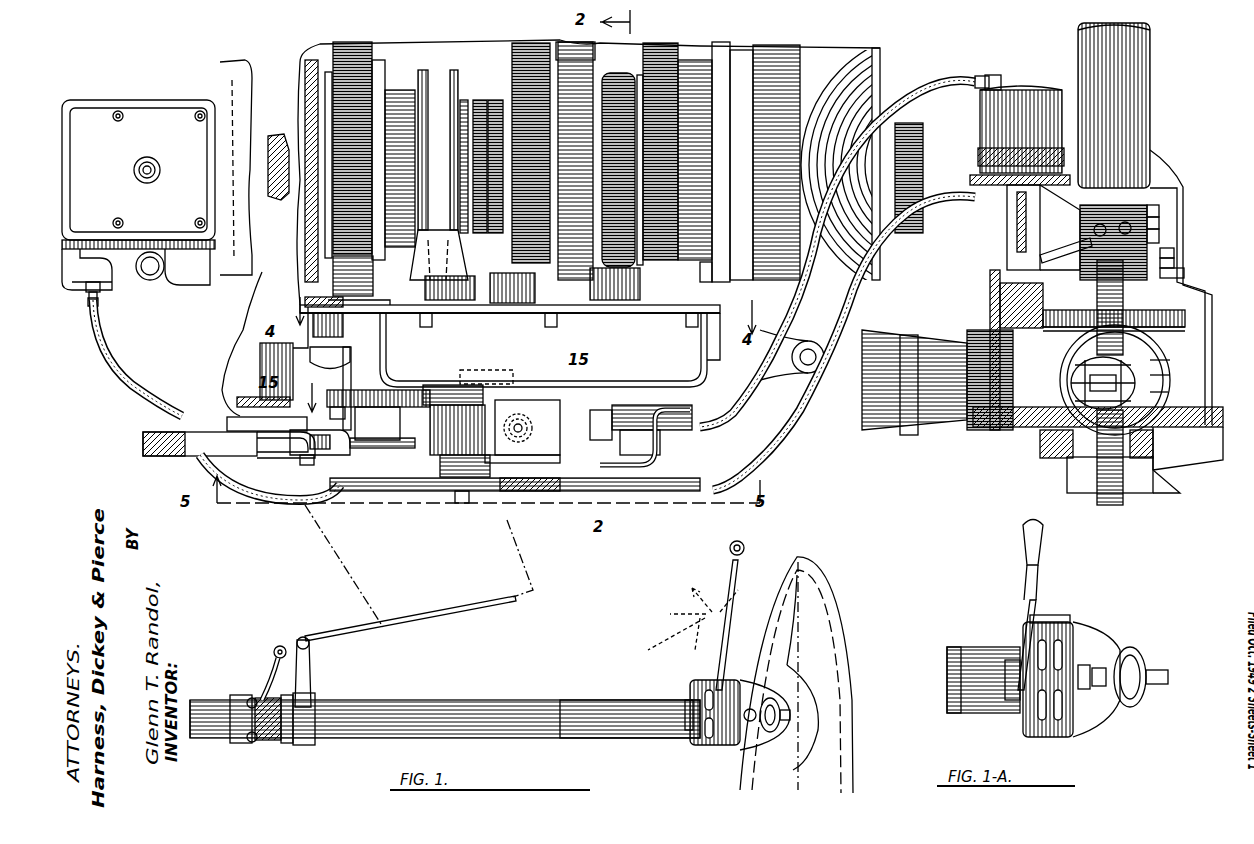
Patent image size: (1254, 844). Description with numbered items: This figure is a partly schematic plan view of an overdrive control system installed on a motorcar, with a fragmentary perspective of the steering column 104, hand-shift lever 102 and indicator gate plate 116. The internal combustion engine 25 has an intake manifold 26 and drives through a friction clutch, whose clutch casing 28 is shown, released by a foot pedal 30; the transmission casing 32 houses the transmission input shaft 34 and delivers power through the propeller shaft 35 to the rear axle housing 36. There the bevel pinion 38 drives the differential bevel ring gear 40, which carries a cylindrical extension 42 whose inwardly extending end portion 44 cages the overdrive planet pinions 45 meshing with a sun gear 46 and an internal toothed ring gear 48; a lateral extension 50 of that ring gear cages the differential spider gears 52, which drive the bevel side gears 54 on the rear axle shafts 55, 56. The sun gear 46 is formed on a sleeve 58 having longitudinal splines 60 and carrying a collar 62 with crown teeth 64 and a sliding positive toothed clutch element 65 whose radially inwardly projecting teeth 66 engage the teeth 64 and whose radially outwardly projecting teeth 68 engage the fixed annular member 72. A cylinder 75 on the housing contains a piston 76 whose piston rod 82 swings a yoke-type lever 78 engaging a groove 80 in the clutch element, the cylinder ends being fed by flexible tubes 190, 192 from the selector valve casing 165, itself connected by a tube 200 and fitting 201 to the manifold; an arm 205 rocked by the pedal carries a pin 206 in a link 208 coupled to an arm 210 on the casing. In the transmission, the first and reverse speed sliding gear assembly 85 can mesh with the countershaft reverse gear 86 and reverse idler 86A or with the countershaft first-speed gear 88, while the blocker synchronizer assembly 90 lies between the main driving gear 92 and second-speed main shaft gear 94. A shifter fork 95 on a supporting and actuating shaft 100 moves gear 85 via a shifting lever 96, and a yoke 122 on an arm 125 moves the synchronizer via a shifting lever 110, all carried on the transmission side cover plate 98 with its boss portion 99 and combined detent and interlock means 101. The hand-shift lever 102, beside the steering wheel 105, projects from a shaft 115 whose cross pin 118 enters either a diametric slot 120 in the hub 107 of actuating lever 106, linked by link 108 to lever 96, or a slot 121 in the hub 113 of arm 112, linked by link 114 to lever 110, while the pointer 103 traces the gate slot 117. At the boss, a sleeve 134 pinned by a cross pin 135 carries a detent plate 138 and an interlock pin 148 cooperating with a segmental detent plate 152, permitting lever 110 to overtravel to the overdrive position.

In FIG. 1, the internal combustion engine 25 is at (146, 108).
In FIG. 1, the intake manifold 26 is at (88, 302).
In FIG. 1, the clutch casing 28 is at (232, 270).
In FIG. 1, the foot pedal 30 is at (143, 445).
In FIG. 1, the transmission casing 32 is at (306, 62).
In FIG. 1, the transmission input shaft 34 is at (279, 136).
In FIG. 1, the propeller shaft 35 is at (915, 150).
In FIG. 1, the rear axle housing 36 is at (1162, 146).
In FIG. 1, the bevel pinion 38 is at (990, 345).
In FIG. 1, the differential bevel ring gear 40 is at (1040, 427).
In FIG. 1, the cylindrical extension 42 is at (1170, 391).
In FIG. 1, the inwardly extending end portion 44 is at (1185, 312).
In FIG. 1, the overdrive planet pinions 45 is at (1185, 320).
In FIG. 1, the sun gear 46 is at (1103, 372).
In FIG. 1, the internal toothed ring gear 48 is at (1185, 328).
In FIG. 1, the lateral extension 50 is at (1172, 355).
In FIG. 1, the differential spider gears 52 is at (1172, 373).
In FIG. 1, the bevel side gears 54 is at (1160, 448).
In FIG. 1, the rear axle shaft 55 is at (1125, 28).
In FIG. 1, the rear axle shaft 56 is at (1100, 503).
In FIG. 1, the sleeve 58 is at (1110, 307).
In FIG. 1, the longitudinal splines 60 is at (1112, 237).
In FIG. 1, the collar 62 is at (1186, 272).
In FIG. 1, the crown teeth 64 is at (1175, 262).
In FIG. 1, the positive toothed clutch element 65 is at (1158, 203).
In FIG. 1, the radially inwardly projecting teeth 66 is at (1159, 217).
In FIG. 1, the radially outwardly projecting teeth 68 is at (1159, 233).
In FIG. 1, the annular member 72 is at (1175, 252).
In FIG. 1, the cylinder 75 is at (1020, 100).
In FIG. 1, the piston 76 is at (978, 156).
In FIG. 1, the yoke-type lever 78 is at (1065, 245).
In FIG. 1, the groove 80 is at (1125, 210).
In FIG. 1, the piston rod 82 is at (1012, 230).
In FIG. 1, the first and reverse speed sliding gear assembly 85 is at (604, 249).
In FIG. 1, the countershaft reverse gear 86 is at (658, 60).
In FIG. 1, the reverse idler 86A is at (690, 236).
In FIG. 1, the countershaft first-speed gear 88 is at (572, 48).
In FIG. 1, the blocker synchronizer assembly 90 is at (400, 90).
In FIG. 1, the main driving gear 92 is at (360, 255).
In FIG. 1, the second-speed main shaft gear 94 is at (512, 92).
In FIG. 1, the shifter fork 95 is at (695, 262).
In FIG. 1, the shifting lever 96 is at (630, 470).
In FIG. 1, the transmission side cover plate 98 is at (680, 378).
In FIG. 1, the boss portion 99 is at (450, 392).
In FIG. 1, the supporting and actuating shaft 100 is at (635, 450).
In FIG. 1, the combined detent and interlock means 101 is at (505, 313).
In FIG. 1, the hand-shift lever 102 is at (746, 562).
In FIG. 1A, the hand-shift lever 102 is at (1022, 604).
In FIG. 1, the pointer 103 is at (700, 690).
In FIG. 1A, the pointer 103 is at (1045, 630).
In FIG. 1, the steering column 104 is at (488, 700).
In FIG. 1A, the steering column 104 is at (962, 648).
In FIG. 1, the steering wheel 105 is at (855, 730).
In FIG. 1, the actuating lever 106 is at (312, 676).
In FIG. 1, the hub 107 is at (305, 738).
In FIG. 1, the link 108 is at (515, 493).
In FIG. 1, the shifting lever 110 is at (450, 478).
In FIG. 1, the arm 112 is at (274, 654).
In FIG. 1, the hub 113 is at (250, 738).
In FIG. 1, the link 114 is at (384, 492).
In FIG. 1, the shaft 115 is at (570, 700).
In FIG. 1A, the shaft 115 is at (968, 670).
In FIG. 1, the indicator gate plate 116 is at (730, 750).
In FIG. 1A, the indicator gate plate 116 is at (1075, 736).
In FIG. 1, the gate slot 117 is at (695, 735).
In FIG. 1A, the gate slot 117 is at (1030, 722).
In FIG. 1, the cross pin 118 is at (268, 740).
In FIG. 1, the diametric slot 120 is at (288, 740).
In FIG. 1, the slot 121 is at (270, 680).
In FIG. 1, the yoke 122 is at (447, 260).
In FIG. 1, the arm 125 is at (359, 291).
In FIG. 1, the sleeve 134 is at (527, 425).
In FIG. 1, the cross pin 135 is at (531, 423).
In FIG. 1, the detent plate 138 is at (495, 460).
In FIG. 1, the interlock pin 148 is at (529, 429).
In FIG. 1, the segmental detent plate 152 is at (510, 392).
In FIG. 1, the casing 165 is at (352, 400).
In FIG. 1, the flexible tube 190 is at (955, 80).
In FIG. 1, the flexible tube 192 is at (790, 452).
In FIG. 1, the tube 200 is at (165, 410).
In FIG. 1, the fitting 201 is at (100, 289).
In FIG. 1, the arm 205 is at (255, 408).
In FIG. 1, the pin 206 is at (297, 503).
In FIG. 1, the link 208 is at (330, 438).
In FIG. 1, the arm 210 is at (383, 450).